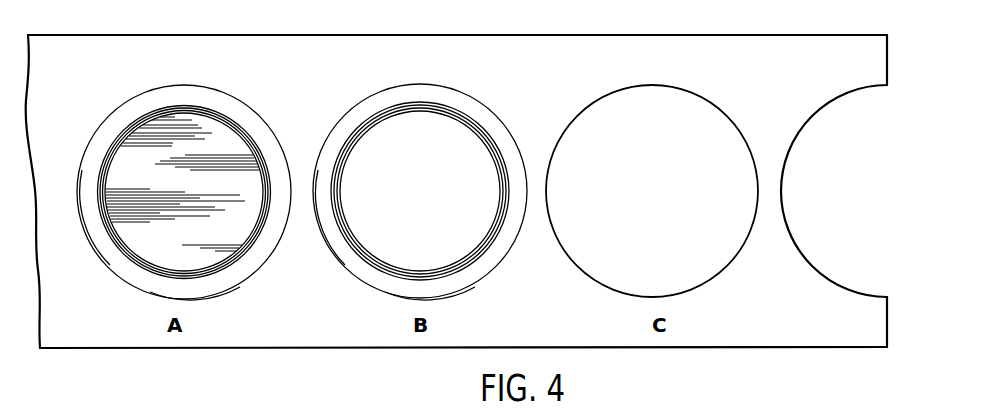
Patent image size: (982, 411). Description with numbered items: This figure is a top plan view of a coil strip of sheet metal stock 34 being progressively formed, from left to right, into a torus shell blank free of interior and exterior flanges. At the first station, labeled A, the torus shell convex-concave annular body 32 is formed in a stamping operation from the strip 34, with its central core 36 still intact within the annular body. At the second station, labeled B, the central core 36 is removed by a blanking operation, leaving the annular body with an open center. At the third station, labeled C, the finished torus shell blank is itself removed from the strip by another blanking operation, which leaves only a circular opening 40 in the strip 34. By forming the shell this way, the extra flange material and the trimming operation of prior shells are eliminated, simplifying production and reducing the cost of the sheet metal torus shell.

The convex-concave annular body 32 is at (240, 115).
The coil strip of sheet metal stock 34 is at (550, 48).
The central core 36 is at (235, 233).
The opening 40 is at (710, 103).